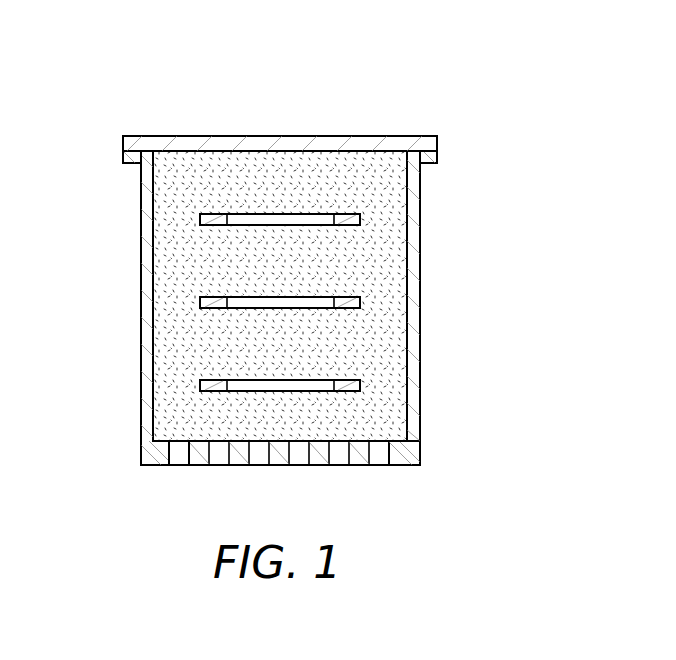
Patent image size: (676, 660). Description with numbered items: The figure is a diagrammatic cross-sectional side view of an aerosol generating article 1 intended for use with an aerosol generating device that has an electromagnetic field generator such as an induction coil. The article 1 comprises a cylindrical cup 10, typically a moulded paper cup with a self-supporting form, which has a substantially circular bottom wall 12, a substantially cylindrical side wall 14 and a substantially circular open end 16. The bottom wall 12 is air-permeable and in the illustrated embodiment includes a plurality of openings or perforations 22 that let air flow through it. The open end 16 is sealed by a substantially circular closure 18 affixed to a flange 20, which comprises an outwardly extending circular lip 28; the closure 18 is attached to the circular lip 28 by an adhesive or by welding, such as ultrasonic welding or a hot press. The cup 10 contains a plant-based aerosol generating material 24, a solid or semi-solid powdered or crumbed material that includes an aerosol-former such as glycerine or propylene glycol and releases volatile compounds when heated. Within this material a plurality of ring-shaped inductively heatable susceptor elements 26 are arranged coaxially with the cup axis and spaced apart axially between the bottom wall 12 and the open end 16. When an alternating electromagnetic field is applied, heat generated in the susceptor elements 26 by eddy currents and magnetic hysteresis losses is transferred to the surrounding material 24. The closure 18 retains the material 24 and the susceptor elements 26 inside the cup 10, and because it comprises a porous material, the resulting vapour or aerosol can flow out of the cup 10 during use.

The aerosol generating article 1 is at (131, 81).
The cylindrical cup 10 is at (96, 238).
The bottom wall 12 is at (321, 459).
The side wall 14 is at (413, 341).
The open end 16 is at (373, 118).
The closure 18 is at (279, 137).
The flange 20 is at (326, 158).
The circular lip 28 is at (433, 154).
The openings or perforations 22 is at (181, 459).
The plant-based aerosol generating material 24 is at (172, 278).
The inductively heatable susceptor elements 26 is at (212, 217).